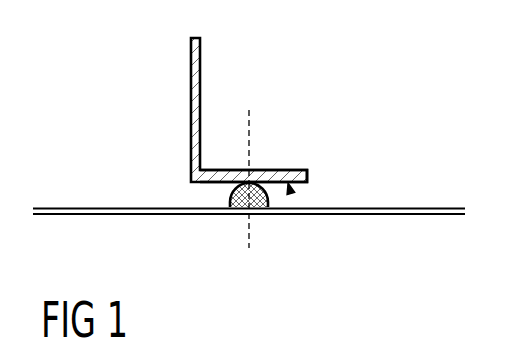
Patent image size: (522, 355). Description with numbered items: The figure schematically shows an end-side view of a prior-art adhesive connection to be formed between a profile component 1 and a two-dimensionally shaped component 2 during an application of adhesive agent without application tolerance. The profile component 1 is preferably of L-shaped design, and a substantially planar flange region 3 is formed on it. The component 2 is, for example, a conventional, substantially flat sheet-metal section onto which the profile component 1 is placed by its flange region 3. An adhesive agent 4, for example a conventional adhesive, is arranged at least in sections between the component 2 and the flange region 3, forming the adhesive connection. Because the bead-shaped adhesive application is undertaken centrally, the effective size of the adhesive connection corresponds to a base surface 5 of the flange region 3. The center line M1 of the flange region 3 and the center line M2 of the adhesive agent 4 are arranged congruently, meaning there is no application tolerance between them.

The profile component 1 is at (196, 62).
The two-dimensionally shaped component 2 is at (415, 212).
The flange region 3 is at (291, 178).
The adhesive agent 4 is at (241, 203).
The base surface 5 is at (290, 192).
The center line of the flange region M1 is at (250, 110).
The center line of the adhesive agent M2 is at (249, 248).